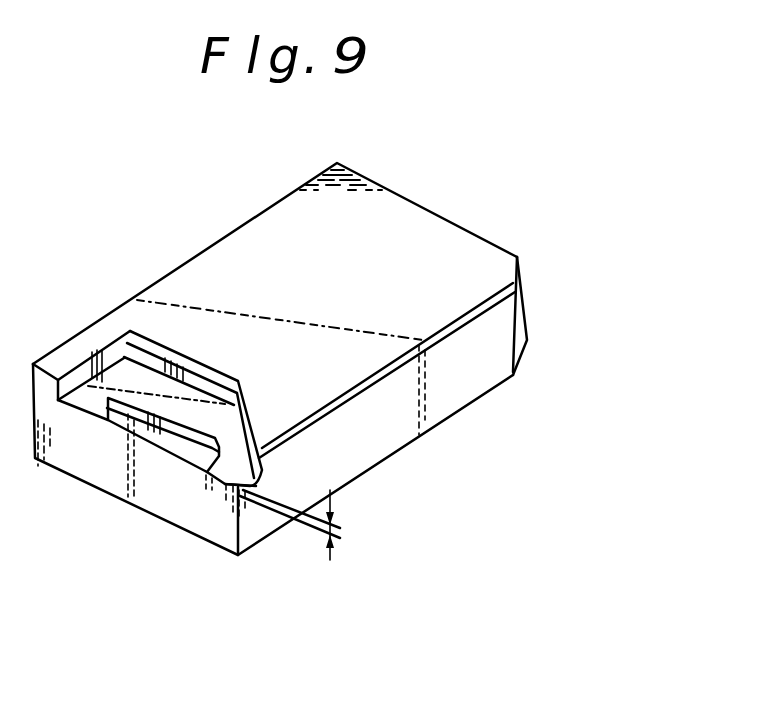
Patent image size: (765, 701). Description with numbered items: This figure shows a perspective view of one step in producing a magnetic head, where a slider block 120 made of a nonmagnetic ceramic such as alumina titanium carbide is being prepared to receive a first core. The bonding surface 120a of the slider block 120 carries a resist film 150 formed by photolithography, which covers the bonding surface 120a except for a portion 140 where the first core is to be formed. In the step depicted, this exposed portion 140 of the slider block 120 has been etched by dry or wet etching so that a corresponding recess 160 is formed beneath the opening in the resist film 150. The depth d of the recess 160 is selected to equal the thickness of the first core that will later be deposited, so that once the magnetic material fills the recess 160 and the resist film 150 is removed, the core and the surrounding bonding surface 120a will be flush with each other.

The slider block 120 is at (527, 304).
The bonding surface 120a is at (385, 370).
The portion where a first core is to be formed 140 is at (140, 380).
The resist film 150 is at (233, 252).
The recess 160 is at (209, 387).